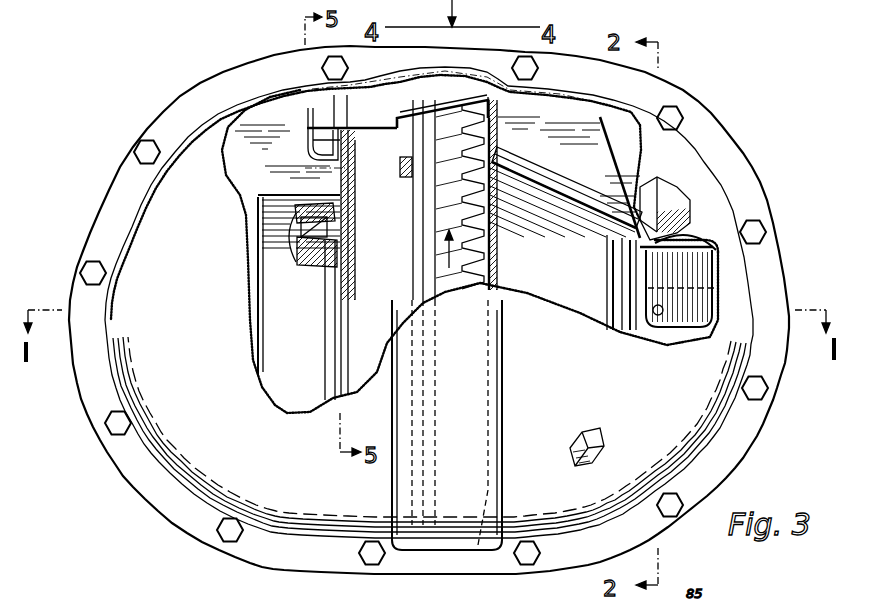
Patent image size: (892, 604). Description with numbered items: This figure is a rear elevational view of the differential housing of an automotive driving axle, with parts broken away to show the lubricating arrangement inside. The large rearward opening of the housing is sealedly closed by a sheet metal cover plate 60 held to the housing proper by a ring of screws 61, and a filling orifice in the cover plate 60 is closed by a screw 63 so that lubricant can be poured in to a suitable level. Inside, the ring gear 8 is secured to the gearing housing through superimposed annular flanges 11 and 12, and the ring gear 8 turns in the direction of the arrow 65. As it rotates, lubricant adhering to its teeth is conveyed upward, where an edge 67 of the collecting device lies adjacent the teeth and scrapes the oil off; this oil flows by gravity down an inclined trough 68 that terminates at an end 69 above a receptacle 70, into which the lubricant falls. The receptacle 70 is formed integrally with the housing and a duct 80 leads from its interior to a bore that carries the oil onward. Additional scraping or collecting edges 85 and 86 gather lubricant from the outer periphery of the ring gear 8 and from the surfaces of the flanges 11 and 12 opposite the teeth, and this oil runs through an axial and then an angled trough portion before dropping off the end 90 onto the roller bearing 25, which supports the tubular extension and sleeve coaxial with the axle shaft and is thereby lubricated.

The ring gear 8 is at (487, 233).
The annular flange 11 is at (430, 226).
The annular flange 12 is at (415, 212).
The roller bearing 25 is at (318, 268).
The cover plate 60 is at (688, 420).
The screws 61 is at (675, 116).
The screw 63 is at (678, 199).
The arrow 65 is at (445, 256).
The edge 67 is at (498, 146).
The inclined trough 68 is at (560, 180).
The trough end 69 is at (686, 242).
The receptacle 70 is at (700, 268).
The duct 80 is at (668, 318).
The scraping edge 85 is at (452, 100).
The scraping edge 86 is at (394, 127).
The trough end 90 is at (310, 163).